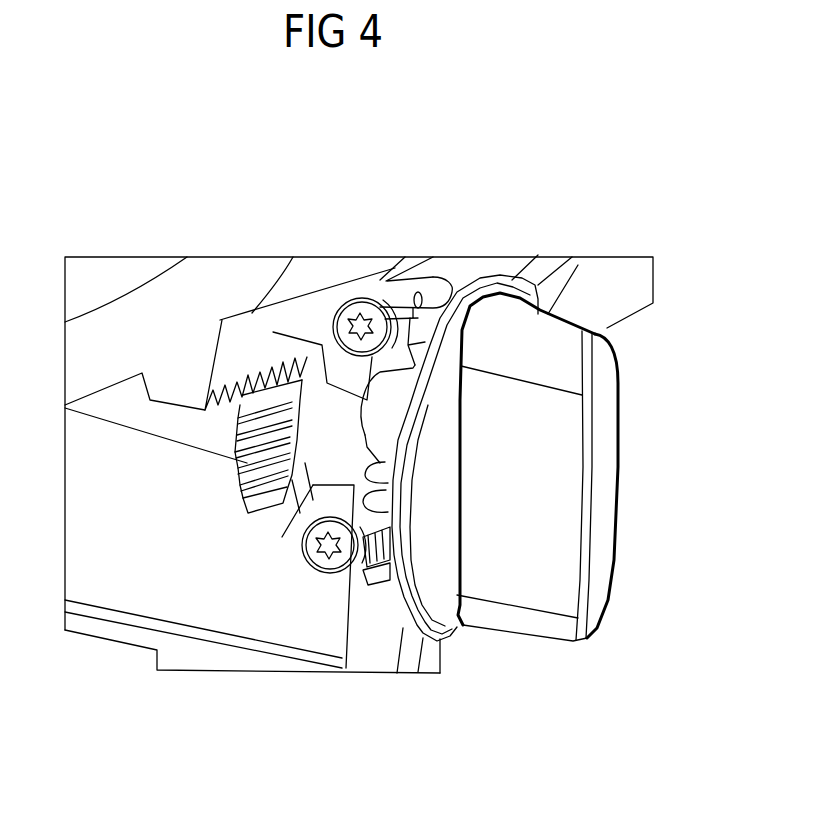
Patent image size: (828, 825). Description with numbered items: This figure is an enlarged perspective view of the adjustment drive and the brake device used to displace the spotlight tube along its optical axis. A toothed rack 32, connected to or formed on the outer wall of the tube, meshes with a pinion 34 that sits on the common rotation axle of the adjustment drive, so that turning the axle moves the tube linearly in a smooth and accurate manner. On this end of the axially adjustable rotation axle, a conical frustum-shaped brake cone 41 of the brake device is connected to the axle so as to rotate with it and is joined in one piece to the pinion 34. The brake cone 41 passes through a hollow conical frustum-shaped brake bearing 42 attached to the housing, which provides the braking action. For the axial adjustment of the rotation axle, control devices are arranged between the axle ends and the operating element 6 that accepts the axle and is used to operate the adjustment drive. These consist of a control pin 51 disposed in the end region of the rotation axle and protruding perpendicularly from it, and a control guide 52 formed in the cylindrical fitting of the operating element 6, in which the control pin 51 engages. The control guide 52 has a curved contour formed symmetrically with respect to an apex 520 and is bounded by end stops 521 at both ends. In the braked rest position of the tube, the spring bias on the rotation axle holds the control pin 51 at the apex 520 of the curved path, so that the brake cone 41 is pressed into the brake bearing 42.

The toothed rack 32 is at (245, 330).
The pinion 34 is at (241, 476).
The brake cone 41 is at (325, 446).
The brake bearing 42 is at (343, 377).
The control pin 51 is at (380, 475).
The control guide 52 is at (390, 447).
The apex 520 is at (388, 487).
The end stop 521 is at (392, 505).
The operating element 6 is at (533, 594).